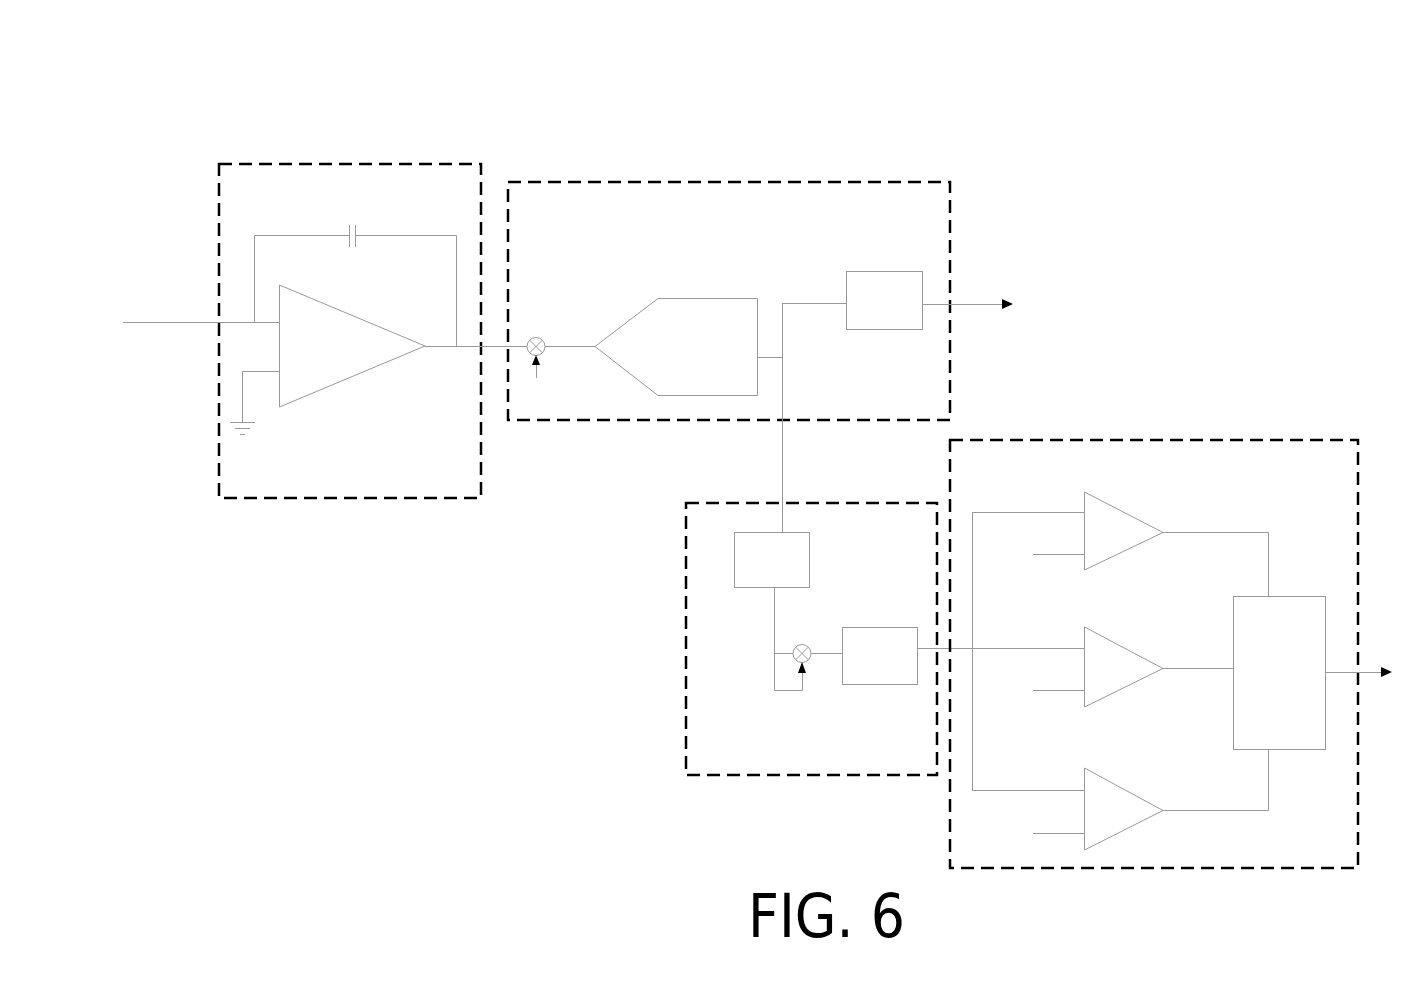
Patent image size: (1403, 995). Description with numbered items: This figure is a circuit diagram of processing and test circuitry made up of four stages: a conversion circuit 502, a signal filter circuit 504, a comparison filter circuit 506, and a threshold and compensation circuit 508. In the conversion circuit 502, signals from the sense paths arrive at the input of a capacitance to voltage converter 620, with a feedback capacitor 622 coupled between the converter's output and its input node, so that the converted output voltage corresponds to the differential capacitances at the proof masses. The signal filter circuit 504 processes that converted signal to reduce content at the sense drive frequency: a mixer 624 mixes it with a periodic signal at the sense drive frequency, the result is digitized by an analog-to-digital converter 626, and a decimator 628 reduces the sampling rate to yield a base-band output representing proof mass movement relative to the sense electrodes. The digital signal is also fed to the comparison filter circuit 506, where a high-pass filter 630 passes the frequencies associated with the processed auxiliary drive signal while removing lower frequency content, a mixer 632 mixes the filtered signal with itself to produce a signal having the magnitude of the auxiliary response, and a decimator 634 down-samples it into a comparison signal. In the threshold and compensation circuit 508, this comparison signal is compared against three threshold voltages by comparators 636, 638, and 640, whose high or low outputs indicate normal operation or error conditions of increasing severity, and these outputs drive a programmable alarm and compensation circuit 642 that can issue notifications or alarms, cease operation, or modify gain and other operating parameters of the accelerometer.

The conversion circuit 502 is at (332, 498).
The capacitance to voltage converter (C2V) 620 is at (355, 314).
The feedback capacitor 622 is at (353, 232).
The signal filter circuit 504 is at (652, 420).
The mixer 624 is at (538, 337).
The analog-to-digital converter 626 is at (678, 298).
The decimator 628 is at (880, 271).
The comparison filter circuit 506 is at (792, 775).
The high-pass filter 630 is at (809, 550).
The mixer 632 is at (802, 644).
The decimator 634 is at (870, 684).
The threshold and compensation circuit 508 is at (1102, 868).
The comparator 636 is at (1112, 508).
The comparator 638 is at (1112, 643).
The comparator 640 is at (1112, 783).
The alarm and compensation circuit 642 is at (1245, 749).